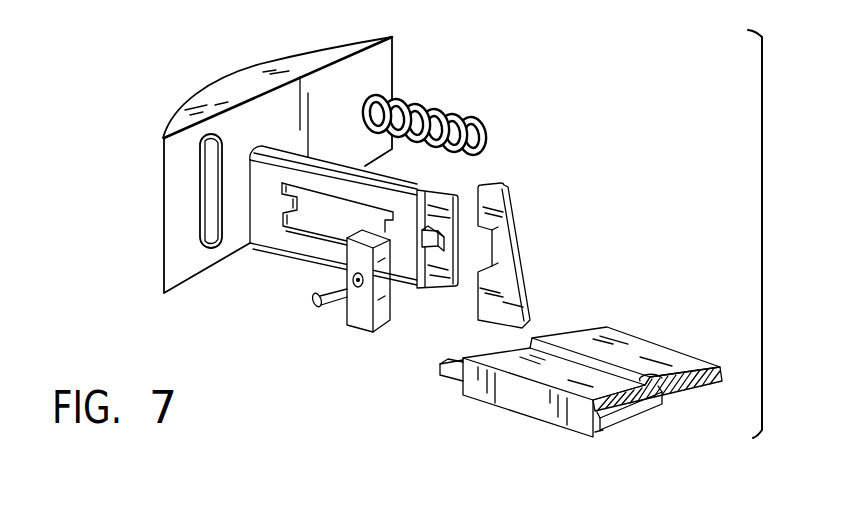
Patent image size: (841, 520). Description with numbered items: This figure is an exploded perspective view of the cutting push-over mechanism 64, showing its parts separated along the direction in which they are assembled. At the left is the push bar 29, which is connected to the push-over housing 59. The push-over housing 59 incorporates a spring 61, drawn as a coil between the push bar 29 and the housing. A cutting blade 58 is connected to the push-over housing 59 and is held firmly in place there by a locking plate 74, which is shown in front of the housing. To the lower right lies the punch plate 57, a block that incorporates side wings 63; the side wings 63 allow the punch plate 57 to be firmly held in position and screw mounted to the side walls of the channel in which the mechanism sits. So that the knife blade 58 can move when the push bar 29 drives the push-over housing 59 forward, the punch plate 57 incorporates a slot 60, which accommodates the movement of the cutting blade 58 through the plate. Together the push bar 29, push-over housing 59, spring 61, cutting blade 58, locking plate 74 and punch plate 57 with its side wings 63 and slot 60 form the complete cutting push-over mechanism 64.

The push bar 29 is at (183, 214).
The cutting push-over mechanism 64 is at (162, 100).
The push-over housing 59 is at (275, 222).
The locking plate 74 is at (362, 312).
The spring 61 is at (486, 111).
The cutting blade 58 is at (497, 225).
The punch plate 57 is at (628, 343).
The slot 60 is at (693, 390).
The side wings 63 is at (440, 366).